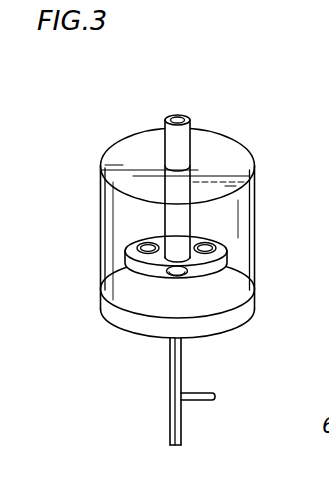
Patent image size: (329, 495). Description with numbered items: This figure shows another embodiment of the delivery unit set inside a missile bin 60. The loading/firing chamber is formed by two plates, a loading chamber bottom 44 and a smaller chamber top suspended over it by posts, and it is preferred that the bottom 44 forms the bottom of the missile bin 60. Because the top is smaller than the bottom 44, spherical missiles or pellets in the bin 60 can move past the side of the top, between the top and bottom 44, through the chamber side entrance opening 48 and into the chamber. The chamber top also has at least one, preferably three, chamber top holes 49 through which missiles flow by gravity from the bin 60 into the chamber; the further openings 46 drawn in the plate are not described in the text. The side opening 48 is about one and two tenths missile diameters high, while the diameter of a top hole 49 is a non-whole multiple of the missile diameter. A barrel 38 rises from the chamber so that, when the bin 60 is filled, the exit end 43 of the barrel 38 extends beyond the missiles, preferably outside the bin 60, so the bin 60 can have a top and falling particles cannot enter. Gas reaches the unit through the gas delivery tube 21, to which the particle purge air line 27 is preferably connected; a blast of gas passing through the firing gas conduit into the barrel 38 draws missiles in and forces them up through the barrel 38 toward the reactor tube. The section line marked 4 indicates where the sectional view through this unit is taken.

The missile bin 60 is at (253, 192).
The chamber side entrance opening 48 is at (134, 288).
The loading chamber bottom 44 is at (227, 295).
The holes in disc 46 is at (222, 249).
The chamber top holes 49 is at (180, 274).
The barrel 38 is at (216, 162).
The exit end of the barrel 43 is at (177, 117).
The gas delivery tube 21 is at (170, 384).
The particle purge air line 27 is at (203, 402).
The section line 4- 4 is at (73, 286).